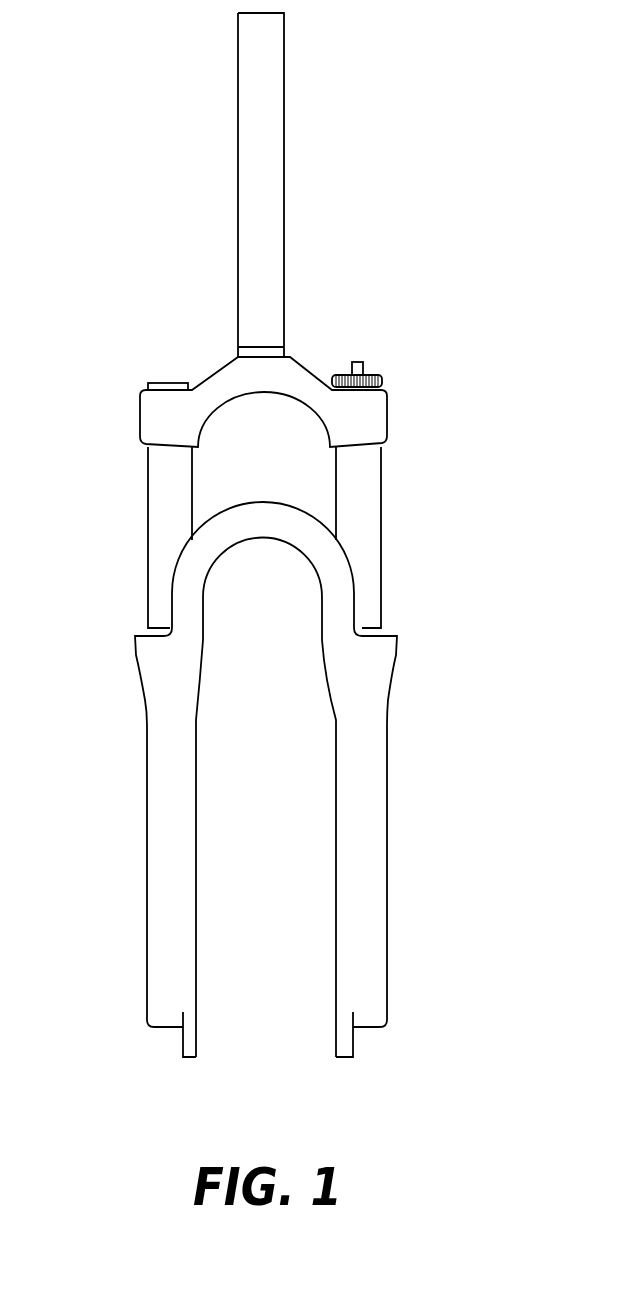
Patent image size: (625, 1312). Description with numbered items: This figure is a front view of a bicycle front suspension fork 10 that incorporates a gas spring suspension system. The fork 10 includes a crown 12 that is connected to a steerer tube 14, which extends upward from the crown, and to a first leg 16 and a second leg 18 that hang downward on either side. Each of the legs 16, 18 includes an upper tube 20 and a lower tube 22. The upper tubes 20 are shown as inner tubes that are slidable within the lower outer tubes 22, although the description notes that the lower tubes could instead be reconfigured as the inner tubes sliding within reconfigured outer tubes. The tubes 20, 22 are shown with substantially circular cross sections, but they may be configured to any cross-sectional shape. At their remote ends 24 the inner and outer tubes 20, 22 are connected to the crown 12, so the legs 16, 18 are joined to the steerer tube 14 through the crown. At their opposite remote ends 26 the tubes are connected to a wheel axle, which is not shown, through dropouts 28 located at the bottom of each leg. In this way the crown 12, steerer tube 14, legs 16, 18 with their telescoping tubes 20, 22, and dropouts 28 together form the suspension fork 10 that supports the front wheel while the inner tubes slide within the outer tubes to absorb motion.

The bicycle front suspension fork 10 is at (91, 264).
The crown 12 is at (377, 406).
The steerer tube 14 is at (277, 214).
The first leg 16 is at (143, 729).
The second leg 18 is at (405, 774).
The upper tube 20 is at (177, 493).
The lower tube 22 is at (155, 828).
The remote ends 24 is at (152, 458).
The remote ends 26 is at (157, 1011).
The dropouts 28 is at (190, 1047).